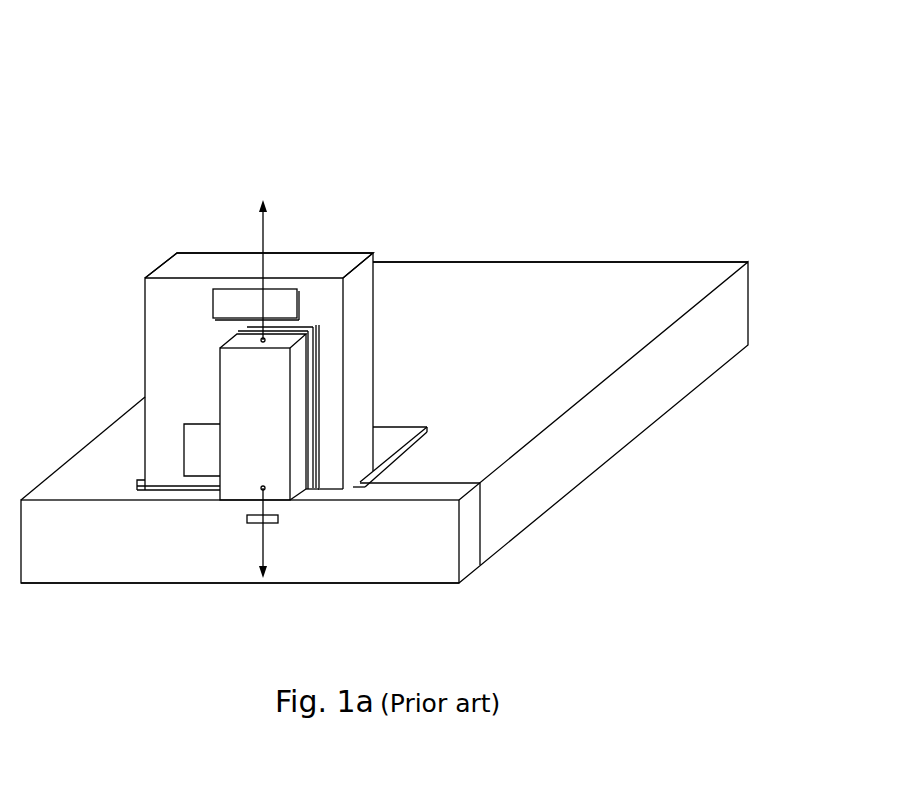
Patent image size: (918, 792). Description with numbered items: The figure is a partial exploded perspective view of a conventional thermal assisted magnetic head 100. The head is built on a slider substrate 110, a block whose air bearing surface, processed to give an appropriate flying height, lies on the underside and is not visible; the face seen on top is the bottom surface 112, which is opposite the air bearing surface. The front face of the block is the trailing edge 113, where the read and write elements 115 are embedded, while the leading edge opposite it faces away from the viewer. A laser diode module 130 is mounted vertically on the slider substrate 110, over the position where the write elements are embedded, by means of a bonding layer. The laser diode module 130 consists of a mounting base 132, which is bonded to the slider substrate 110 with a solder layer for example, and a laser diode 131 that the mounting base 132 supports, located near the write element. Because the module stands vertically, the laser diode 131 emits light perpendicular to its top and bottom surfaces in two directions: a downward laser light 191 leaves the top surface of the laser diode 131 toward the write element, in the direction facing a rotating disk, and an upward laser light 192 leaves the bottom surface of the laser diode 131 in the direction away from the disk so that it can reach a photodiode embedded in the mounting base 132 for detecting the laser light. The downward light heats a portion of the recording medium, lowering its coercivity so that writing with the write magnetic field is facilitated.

The thermal assisted magnetic head 100 is at (136, 34).
The slider substrate 110 is at (605, 245).
The bottom surface 112 is at (425, 288).
The trailing edge 113 is at (126, 537).
The read and write elements 115 is at (255, 523).
The laser diode module 130 is at (130, 299).
The laser diode 131 is at (230, 375).
The mounting base 132 is at (178, 265).
The downward laser light 191 is at (284, 532).
The upward laser light 192 is at (285, 271).